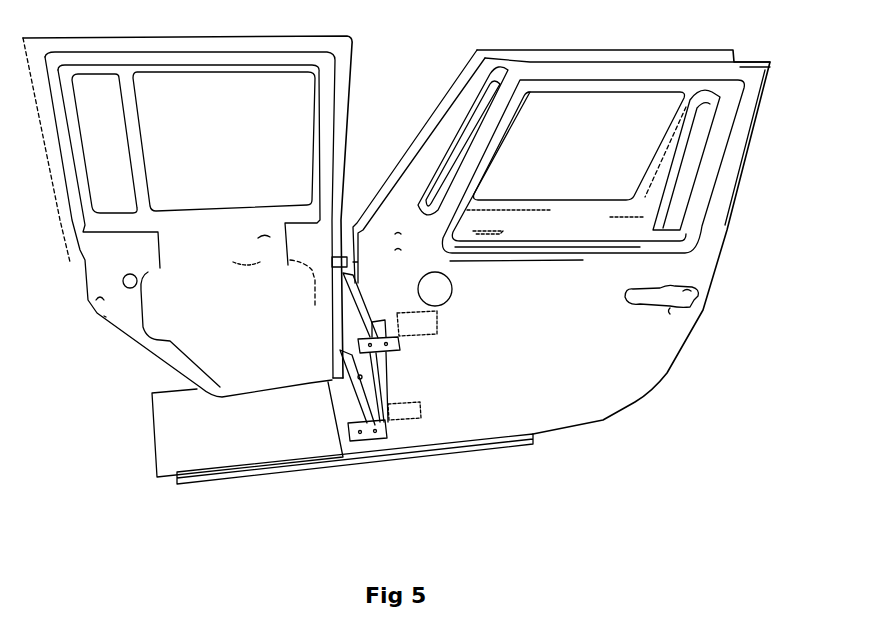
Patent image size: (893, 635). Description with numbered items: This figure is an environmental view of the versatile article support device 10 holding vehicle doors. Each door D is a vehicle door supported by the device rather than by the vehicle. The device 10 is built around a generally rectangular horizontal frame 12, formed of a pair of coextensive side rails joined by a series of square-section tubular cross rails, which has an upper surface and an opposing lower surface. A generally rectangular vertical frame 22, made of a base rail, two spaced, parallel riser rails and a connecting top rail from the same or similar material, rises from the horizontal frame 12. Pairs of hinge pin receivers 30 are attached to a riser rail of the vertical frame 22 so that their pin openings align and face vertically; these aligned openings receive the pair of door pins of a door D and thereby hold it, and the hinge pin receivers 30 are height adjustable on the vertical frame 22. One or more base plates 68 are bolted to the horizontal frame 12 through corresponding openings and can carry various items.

The door D is at (320, 43).
The versatile article support device 10 is at (317, 418).
The horizontal frame 12 is at (264, 487).
The vertical frame 22 is at (393, 383).
The hinge pin receivers 30 is at (350, 428).
The base plate 68 is at (177, 448).